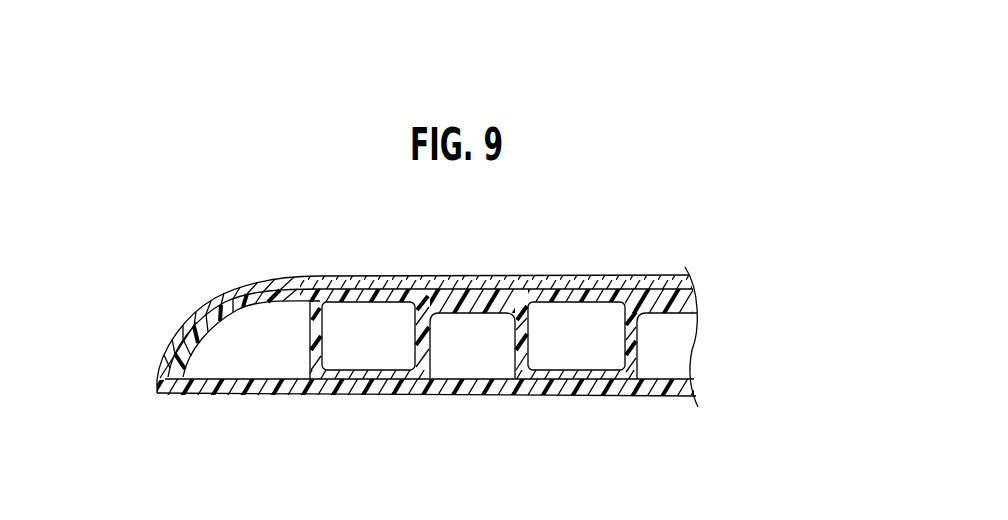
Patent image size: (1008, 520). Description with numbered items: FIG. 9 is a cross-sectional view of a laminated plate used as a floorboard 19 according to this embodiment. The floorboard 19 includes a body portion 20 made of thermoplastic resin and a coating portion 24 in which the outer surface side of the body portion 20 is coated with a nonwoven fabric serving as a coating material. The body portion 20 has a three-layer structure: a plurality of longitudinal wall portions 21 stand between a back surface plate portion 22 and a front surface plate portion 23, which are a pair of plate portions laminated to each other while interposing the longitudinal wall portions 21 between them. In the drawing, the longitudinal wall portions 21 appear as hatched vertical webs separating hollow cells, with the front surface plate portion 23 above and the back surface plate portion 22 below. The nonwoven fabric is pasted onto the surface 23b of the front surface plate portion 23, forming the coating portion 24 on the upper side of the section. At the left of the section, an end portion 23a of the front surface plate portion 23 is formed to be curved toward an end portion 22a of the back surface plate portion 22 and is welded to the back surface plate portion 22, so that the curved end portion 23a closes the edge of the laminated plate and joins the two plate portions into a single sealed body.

The floorboard (laminated plate) 19 is at (578, 240).
The body portion 20 is at (768, 280).
The longitudinal wall portions 21 is at (630, 342).
The back surface plate portion 22 is at (680, 387).
The end portion of the back surface plate portion 22a is at (257, 385).
The front surface plate portion 23 is at (692, 295).
The end portion of the front surface plate portion 23a is at (186, 331).
The surface of the front surface plate portion 23b is at (470, 277).
The coating portion 24 is at (388, 277).